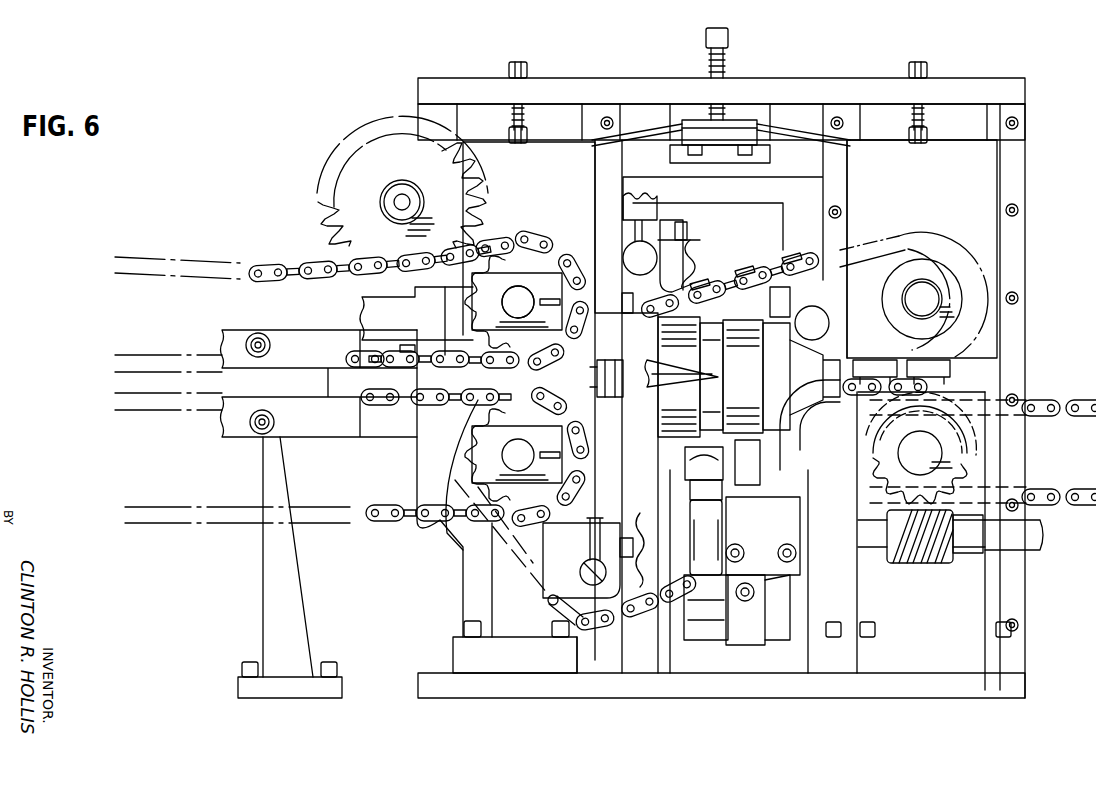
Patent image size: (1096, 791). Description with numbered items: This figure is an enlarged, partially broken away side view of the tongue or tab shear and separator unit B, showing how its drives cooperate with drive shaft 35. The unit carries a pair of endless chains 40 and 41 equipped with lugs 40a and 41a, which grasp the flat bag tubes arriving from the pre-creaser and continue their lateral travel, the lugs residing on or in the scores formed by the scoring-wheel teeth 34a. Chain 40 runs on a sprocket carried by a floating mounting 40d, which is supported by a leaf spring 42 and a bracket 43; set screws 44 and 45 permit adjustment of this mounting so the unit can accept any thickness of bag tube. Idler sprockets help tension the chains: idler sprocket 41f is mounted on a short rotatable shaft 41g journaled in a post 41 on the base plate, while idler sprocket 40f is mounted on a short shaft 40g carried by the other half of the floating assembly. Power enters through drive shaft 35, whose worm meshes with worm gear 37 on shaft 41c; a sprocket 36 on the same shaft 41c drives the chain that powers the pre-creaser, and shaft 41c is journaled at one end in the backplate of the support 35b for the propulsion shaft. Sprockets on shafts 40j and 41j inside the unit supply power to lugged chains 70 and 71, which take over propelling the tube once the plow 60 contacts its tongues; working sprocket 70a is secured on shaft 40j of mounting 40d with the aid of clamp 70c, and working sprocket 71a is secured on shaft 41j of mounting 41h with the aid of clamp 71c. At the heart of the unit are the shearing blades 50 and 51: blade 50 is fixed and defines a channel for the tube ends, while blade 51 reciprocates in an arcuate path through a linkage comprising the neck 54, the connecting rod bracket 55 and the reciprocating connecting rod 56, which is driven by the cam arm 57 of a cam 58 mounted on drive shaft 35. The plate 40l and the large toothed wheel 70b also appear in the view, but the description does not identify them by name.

The tongue or tab shear and separator unit B is at (1028, 113).
The teeth 34a is at (1070, 506).
The drive shaft 35 is at (915, 565).
The support for propulsion shaft 35b is at (1012, 600).
The sprocket 36 is at (980, 445).
The worm gear 37 is at (955, 462).
The endless chain 40 is at (703, 278).
The lugs 40a is at (743, 267).
The floating mounting 40d is at (548, 155).
The idler sprocket 40f is at (704, 255).
The short shaft 40g is at (645, 258).
The shaft 40j is at (518, 290).
The mounting plate 40l is at (602, 225).
The endless chain 41 is at (593, 626).
The lugs 41a is at (628, 630).
The shaft 41c is at (960, 470).
The idler sprocket 41f is at (640, 547).
The short rotatable shaft 41g is at (590, 630).
The mounting 41h is at (512, 668).
The shaft 41j is at (593, 519).
The leaf spring 42 is at (783, 125).
The bracket 43 is at (740, 135).
The set screw 44 is at (533, 72).
The set screw 45 is at (728, 64).
The shearing blade 50 is at (778, 320).
The shearing blade 51 is at (747, 373).
The duck's neck 54 is at (760, 482).
The connecting rod bracket 55 is at (687, 453).
The reciprocating connecting rod 56 is at (706, 532).
The cam arm 57 is at (740, 650).
The cam 58 is at (792, 520).
The plow 60 is at (666, 372).
The lugged chain 70 is at (500, 240).
The working sprocket 70a is at (475, 297).
The drive gear 70b is at (330, 198).
The clamp 70c is at (470, 312).
The lugged chain 71 is at (585, 468).
The working sprocket 71a is at (480, 460).
The clamp 71c is at (485, 455).